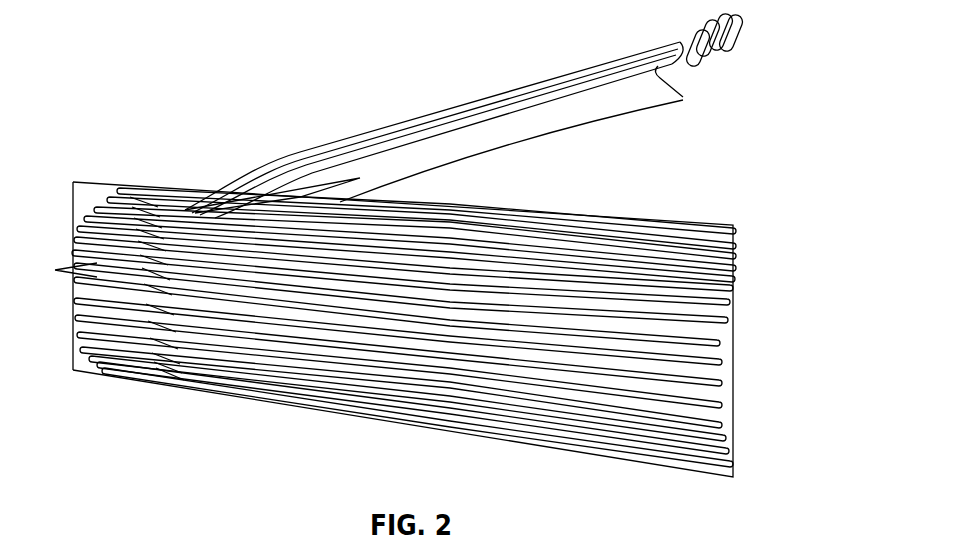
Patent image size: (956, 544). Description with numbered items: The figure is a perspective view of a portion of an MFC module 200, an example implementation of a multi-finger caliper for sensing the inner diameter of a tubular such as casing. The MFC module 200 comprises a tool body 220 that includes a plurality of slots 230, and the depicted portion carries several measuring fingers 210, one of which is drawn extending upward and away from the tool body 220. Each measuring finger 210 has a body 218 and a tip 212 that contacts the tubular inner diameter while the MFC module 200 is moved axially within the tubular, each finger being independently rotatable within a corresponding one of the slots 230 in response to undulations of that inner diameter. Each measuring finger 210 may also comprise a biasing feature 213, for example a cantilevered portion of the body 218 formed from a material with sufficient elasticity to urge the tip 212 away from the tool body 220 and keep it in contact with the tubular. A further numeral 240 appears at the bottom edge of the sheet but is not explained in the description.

The MFC module 200 is at (162, 52).
The measuring finger 210 is at (730, 75).
The tip 212 is at (692, 33).
The biasing feature 213 is at (342, 190).
The body 218 is at (410, 150).
The tool body 220 is at (88, 196).
The slots 230 is at (716, 336).
The fiber array 240 is at (618, 537).